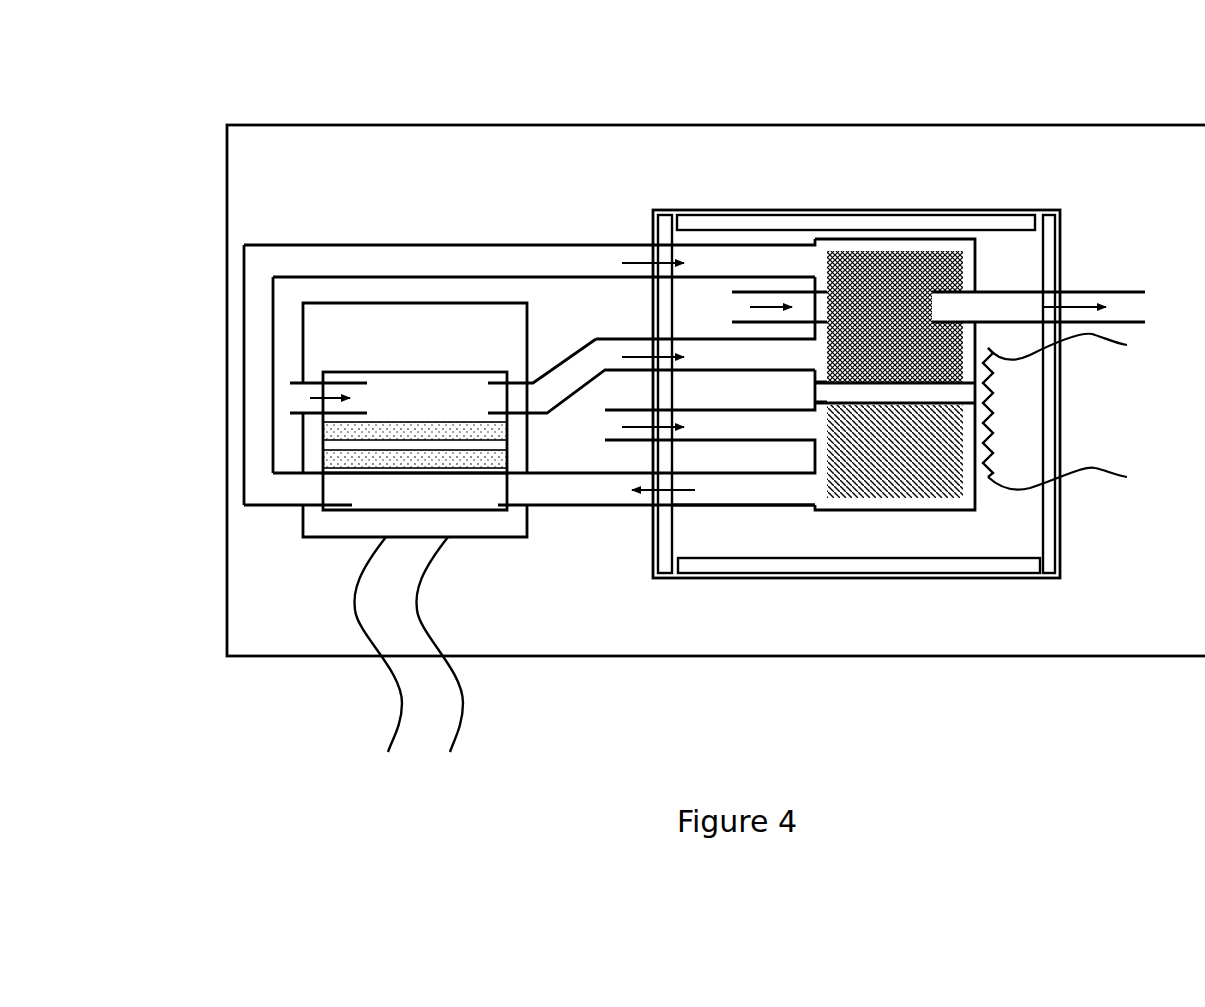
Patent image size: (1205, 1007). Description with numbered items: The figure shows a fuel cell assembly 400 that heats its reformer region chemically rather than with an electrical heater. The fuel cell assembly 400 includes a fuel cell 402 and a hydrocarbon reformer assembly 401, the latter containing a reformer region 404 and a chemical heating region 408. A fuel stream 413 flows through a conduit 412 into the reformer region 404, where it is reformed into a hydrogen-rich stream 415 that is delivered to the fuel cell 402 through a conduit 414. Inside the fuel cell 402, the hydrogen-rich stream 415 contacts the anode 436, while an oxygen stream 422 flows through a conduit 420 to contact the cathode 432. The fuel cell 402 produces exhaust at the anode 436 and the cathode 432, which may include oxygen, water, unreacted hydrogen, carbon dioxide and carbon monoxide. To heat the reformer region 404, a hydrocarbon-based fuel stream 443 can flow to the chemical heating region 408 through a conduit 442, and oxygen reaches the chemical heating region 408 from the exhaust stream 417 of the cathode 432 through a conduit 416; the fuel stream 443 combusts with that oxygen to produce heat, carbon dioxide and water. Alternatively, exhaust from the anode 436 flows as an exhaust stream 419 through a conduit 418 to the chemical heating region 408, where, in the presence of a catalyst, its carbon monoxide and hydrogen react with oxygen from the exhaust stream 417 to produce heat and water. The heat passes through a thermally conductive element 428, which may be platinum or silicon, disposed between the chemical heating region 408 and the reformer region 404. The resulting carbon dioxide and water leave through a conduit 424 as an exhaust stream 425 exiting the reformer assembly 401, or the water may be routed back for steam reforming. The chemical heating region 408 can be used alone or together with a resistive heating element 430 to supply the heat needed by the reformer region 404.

The fuel cell assembly 400 is at (302, 92).
The hydrocarbon reformer assembly 401 is at (588, 185).
The fuel cell 402 is at (425, 372).
The reformer region 404 is at (883, 490).
The chemical heating region 408 is at (880, 250).
The conduit 412 is at (773, 425).
The fuel stream 413 is at (652, 430).
The conduit 414 is at (773, 492).
The hydrogen-rich stream 415 is at (652, 490).
The conduit 416 is at (773, 357).
The exhaust stream 417 is at (650, 355).
The conduit 418 is at (713, 262).
The exhaust stream 419 is at (655, 262).
The conduit 420 is at (307, 397).
The oxygen stream 422 is at (330, 420).
The conduit 424 is at (1020, 307).
The exhaust stream 425 is at (1085, 292).
The thermally conductive element 428 is at (960, 393).
The resistive heating element 430 is at (992, 405).
The cathode 432 is at (403, 418).
The anode 436 is at (442, 470).
The conduit 442 is at (748, 305).
The fuel stream 443 is at (774, 305).